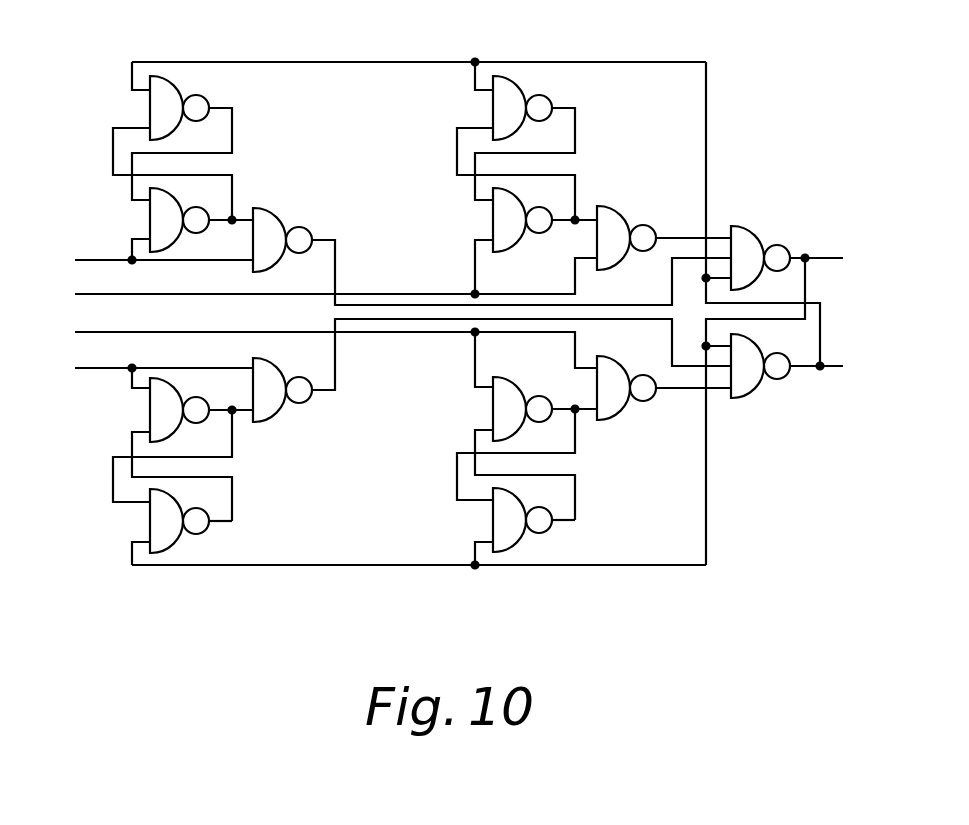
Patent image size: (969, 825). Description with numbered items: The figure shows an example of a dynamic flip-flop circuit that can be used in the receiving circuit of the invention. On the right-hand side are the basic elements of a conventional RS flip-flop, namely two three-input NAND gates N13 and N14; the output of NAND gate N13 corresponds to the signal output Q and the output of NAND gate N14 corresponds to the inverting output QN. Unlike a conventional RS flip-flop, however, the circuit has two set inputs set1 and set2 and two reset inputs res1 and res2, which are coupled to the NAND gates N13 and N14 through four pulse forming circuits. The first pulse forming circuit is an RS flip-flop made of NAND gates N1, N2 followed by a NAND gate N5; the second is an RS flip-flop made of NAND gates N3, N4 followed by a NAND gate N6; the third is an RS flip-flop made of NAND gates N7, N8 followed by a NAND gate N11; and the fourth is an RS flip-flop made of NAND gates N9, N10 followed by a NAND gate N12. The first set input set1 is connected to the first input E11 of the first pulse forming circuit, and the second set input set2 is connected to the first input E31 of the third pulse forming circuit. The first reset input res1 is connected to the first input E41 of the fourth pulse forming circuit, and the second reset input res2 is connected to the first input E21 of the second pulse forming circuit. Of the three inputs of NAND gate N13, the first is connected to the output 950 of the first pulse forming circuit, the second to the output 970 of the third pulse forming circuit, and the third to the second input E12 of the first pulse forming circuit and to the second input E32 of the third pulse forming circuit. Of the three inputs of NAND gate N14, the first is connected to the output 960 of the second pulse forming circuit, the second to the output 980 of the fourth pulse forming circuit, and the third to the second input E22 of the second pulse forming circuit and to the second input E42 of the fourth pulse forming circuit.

The NAND gate N1 is at (172, 143).
The NAND gate N2 is at (201, 215).
The NAND gate N3 is at (183, 449).
The NAND gate N4 is at (191, 514).
The NAND gate N5 is at (283, 234).
The NAND gate N6 is at (283, 383).
The NAND gate N7 is at (516, 141).
The NAND gate N8 is at (545, 213).
The NAND gate N9 is at (527, 442).
The NAND gate N10 is at (534, 514).
The NAND gate N11 is at (630, 247).
The NAND gate N12 is at (630, 382).
The NAND gate N13 is at (767, 252).
The NAND gate N14 is at (767, 361).
The output of the first pulse forming circuit 950 is at (521, 258).
The output of the second pulse forming circuit 960 is at (521, 372).
The output of the third pulse forming circuit 970 is at (693, 224).
The output of the fourth pulse forming circuit 980 is at (693, 405).
The first input of the first pulse forming circuit E11 is at (120, 242).
The second input of the first pulse forming circuit E12 is at (117, 83).
The first input of the second pulse forming circuit E21 is at (120, 388).
The second input of the second pulse forming circuit E22 is at (120, 547).
The first input of the third pulse forming circuit E31 is at (497, 267).
The second input of the third pulse forming circuit E32 is at (419, 60).
The first input of the fourth pulse forming circuit E41 is at (497, 359).
The second input of the fourth pulse forming circuit E42 is at (419, 574).
The first set input set1 is at (141, 261).
The second set input set2 is at (311, 285).
The first reset input res1 is at (311, 343).
The second reset input res2 is at (139, 371).
The signal output Q is at (784, 404).
The inverting output QN is at (791, 222).